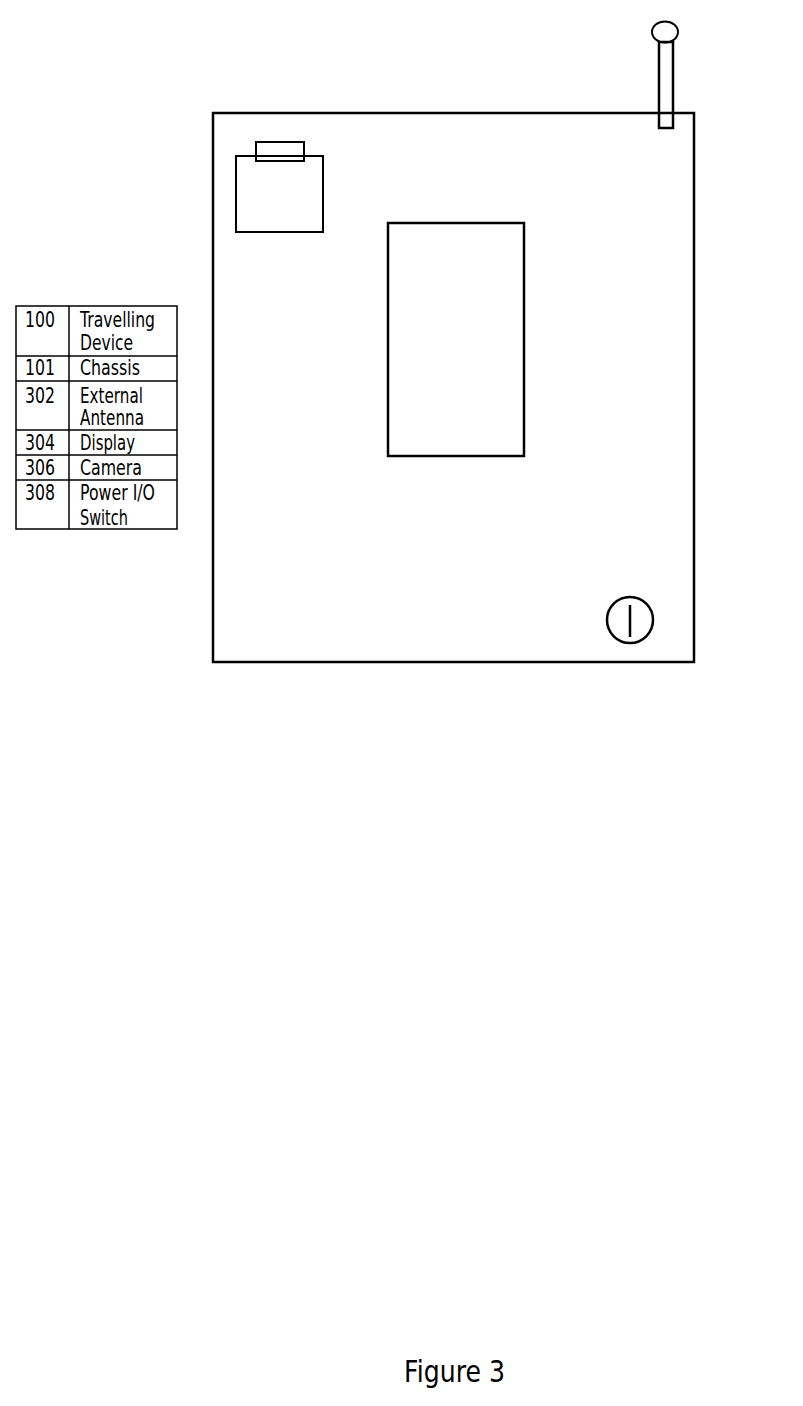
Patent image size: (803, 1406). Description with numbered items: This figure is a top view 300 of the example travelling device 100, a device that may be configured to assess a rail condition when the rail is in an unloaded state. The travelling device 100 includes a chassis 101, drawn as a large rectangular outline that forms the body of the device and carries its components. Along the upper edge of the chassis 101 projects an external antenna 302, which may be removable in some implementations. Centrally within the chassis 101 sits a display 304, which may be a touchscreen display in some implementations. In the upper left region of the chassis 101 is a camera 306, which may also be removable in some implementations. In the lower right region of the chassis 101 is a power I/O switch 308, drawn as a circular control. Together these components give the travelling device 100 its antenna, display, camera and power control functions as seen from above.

The top view 300 is at (94, 60).
The travelling device 100 is at (327, 97).
The chassis 101 is at (239, 112).
The external antenna 302 is at (659, 72).
The display 304 is at (442, 350).
The camera 306 is at (265, 202).
The power I/O switch 308 is at (614, 598).